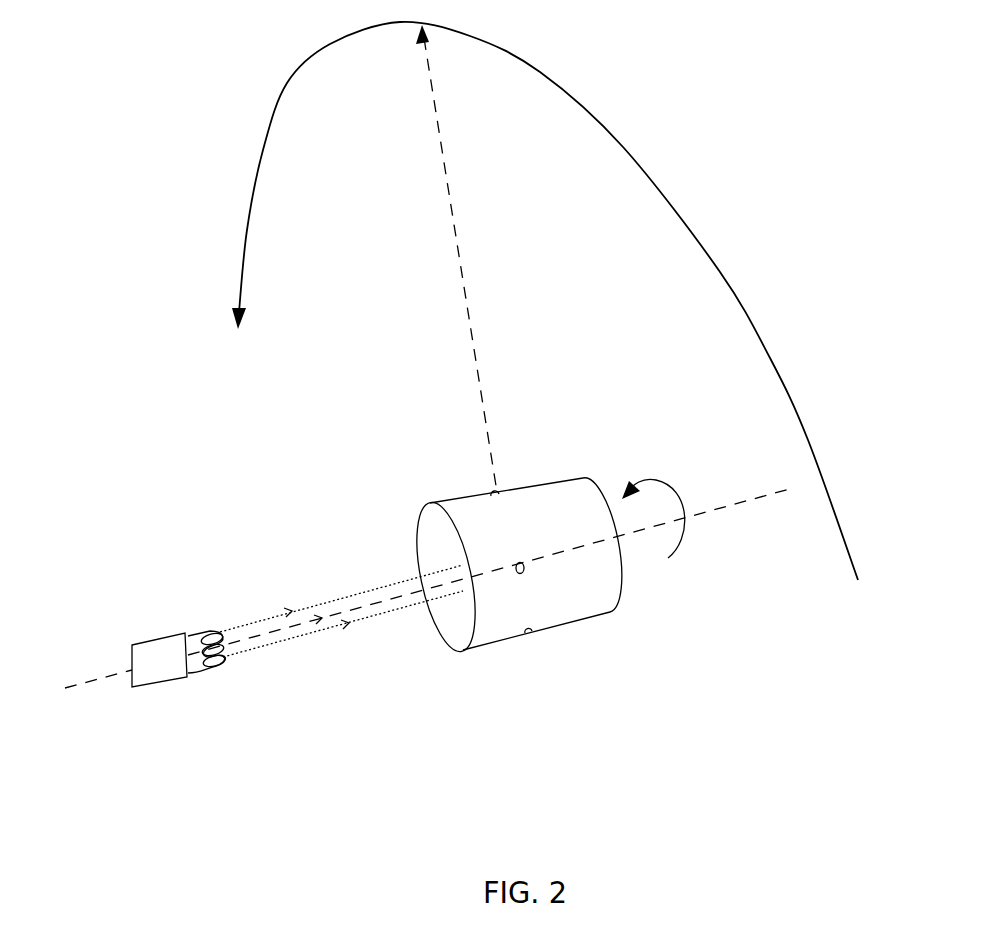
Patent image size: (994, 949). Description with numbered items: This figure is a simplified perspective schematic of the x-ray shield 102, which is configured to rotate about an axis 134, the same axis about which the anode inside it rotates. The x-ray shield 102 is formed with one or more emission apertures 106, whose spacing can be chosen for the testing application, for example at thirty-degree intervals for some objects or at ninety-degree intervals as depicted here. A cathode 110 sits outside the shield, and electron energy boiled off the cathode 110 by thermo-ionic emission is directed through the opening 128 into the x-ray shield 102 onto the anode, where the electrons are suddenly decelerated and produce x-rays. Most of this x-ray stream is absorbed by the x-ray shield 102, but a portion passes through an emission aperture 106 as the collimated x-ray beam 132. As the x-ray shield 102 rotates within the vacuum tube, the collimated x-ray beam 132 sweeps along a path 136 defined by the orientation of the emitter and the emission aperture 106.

The x-ray shield 102 is at (557, 502).
The emission apertures 106 is at (506, 484).
The cathode 110 is at (160, 640).
The opening 128 is at (420, 553).
The collimated x-ray beam 132 is at (467, 317).
The axis 134 is at (773, 493).
The path 136 is at (720, 272).